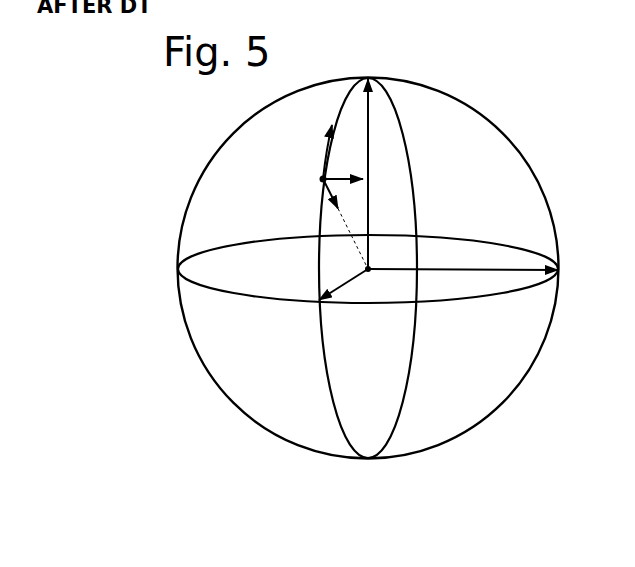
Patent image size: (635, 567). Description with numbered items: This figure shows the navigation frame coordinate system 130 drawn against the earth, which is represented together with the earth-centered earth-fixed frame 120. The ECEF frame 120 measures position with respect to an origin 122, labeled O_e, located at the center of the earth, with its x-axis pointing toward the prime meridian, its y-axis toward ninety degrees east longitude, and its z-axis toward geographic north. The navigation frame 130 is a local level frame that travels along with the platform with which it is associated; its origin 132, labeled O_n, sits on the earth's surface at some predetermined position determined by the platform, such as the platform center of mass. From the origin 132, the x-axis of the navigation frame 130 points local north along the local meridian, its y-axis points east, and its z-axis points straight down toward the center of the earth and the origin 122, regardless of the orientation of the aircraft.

The earth-centered earth-fixed (ECEF) frame coordinate system 120 is at (525, 408).
The origin of the ECEF frame 122 is at (380, 250).
The navigation frame coordinate system 130 is at (277, 150).
The origin of the navigation frame 132 is at (322, 180).